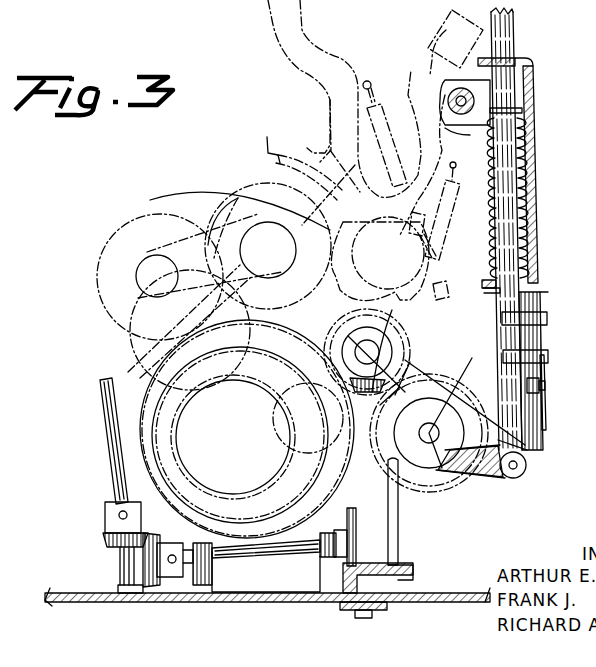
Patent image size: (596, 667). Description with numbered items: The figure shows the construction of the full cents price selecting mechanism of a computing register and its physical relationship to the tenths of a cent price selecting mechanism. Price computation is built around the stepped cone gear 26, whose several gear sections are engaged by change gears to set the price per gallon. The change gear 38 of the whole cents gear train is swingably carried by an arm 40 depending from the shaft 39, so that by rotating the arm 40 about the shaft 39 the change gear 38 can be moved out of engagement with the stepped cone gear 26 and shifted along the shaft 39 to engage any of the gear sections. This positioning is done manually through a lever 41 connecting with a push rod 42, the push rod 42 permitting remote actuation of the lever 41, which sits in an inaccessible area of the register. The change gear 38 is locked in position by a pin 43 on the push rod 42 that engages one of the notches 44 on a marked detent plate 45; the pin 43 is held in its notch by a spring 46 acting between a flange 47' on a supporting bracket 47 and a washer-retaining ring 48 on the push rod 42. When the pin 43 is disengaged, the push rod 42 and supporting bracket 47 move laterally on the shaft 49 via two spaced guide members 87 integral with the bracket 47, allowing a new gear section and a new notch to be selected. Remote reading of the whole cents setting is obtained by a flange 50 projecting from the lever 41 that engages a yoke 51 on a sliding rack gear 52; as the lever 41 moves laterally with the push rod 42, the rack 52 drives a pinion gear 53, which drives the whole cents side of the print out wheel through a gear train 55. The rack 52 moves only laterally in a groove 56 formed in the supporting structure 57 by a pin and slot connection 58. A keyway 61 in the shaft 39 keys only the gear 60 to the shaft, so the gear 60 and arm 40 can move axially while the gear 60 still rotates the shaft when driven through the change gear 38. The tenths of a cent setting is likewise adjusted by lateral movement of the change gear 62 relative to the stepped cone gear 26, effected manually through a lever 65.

The stepped cone gear 26 is at (118, 384).
The change gear 38 is at (395, 340).
The shaft 39 is at (425, 470).
The arm 40 is at (420, 380).
The lever 41 is at (490, 478).
The push rod 42 is at (542, 293).
The pin 43 is at (547, 382).
The notches 44 is at (546, 380).
The detent plate 45 is at (540, 425).
The spring 46 is at (536, 196).
The supporting bracket 47 is at (524, 57).
The flange 47' is at (481, 302).
The washer-retaining ring 48 is at (526, 110).
The shaft 49 is at (455, 99).
The flange 50 is at (372, 458).
The yoke 51 is at (400, 462).
The sliding rack gear 52 is at (418, 557).
The pinion gear 53 is at (333, 556).
The gear train 55 is at (105, 548).
The groove 56 is at (385, 604).
The supporting structure 57 is at (450, 592).
The pin and slot connection 58 is at (354, 616).
The gear 60 is at (460, 490).
The keyway 61 is at (458, 395).
The change gear 62 is at (133, 220).
The lever 65 is at (444, 36).
The guide members 87 is at (466, 130).